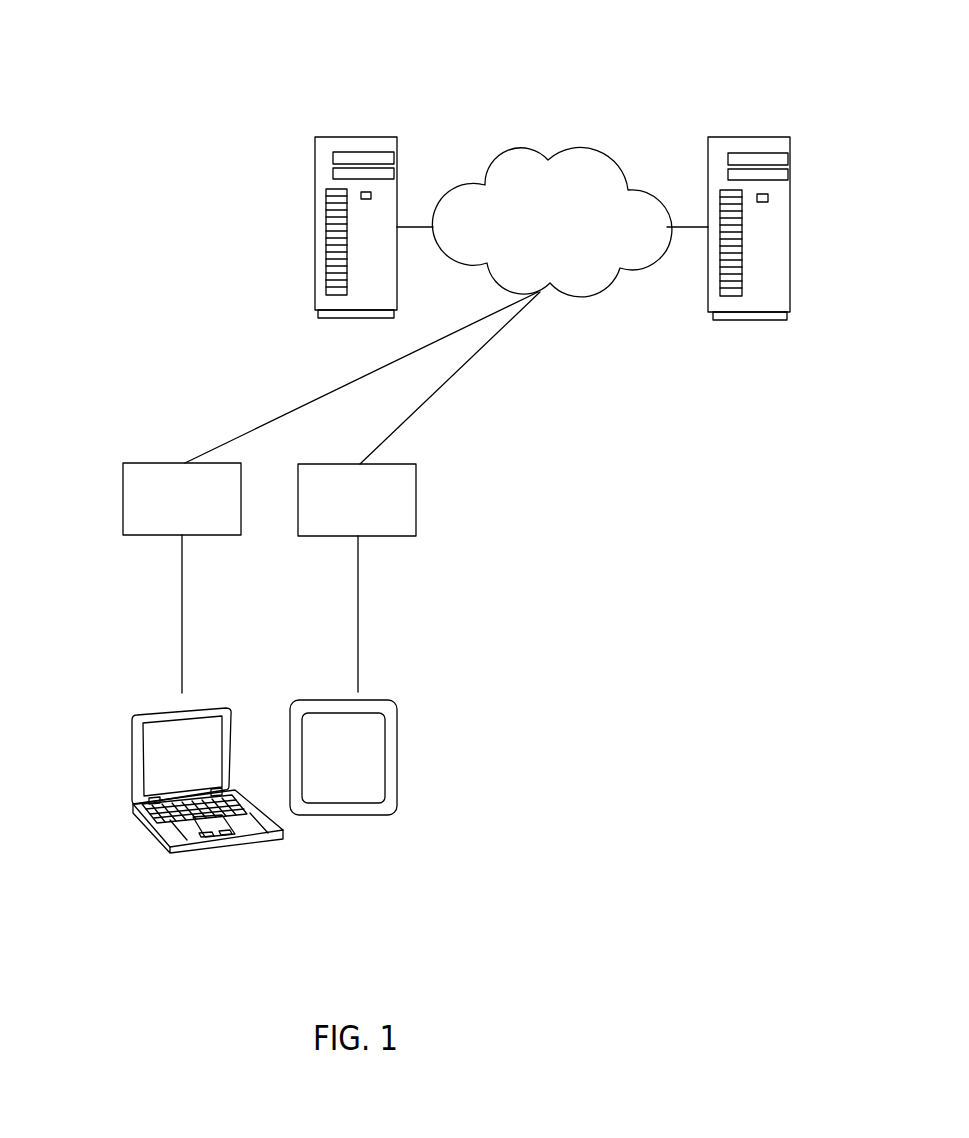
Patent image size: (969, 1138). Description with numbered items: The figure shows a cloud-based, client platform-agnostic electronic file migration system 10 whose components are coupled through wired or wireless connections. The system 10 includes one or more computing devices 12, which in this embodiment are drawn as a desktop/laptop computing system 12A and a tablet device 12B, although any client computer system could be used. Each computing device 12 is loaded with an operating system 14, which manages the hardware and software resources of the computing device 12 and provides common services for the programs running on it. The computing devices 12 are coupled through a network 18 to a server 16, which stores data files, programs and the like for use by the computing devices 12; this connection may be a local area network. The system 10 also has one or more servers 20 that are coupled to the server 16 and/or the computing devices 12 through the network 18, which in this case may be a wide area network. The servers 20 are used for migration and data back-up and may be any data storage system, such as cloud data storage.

The electronic file migration system 10 is at (188, 46).
The computing device 12 is at (98, 712).
The desktop/laptop computing system 12A is at (197, 711).
The tablet device 12B is at (368, 698).
The operating system 14 is at (122, 497).
The server 16 is at (313, 272).
The network 18 is at (633, 190).
The servers 20 is at (752, 321).